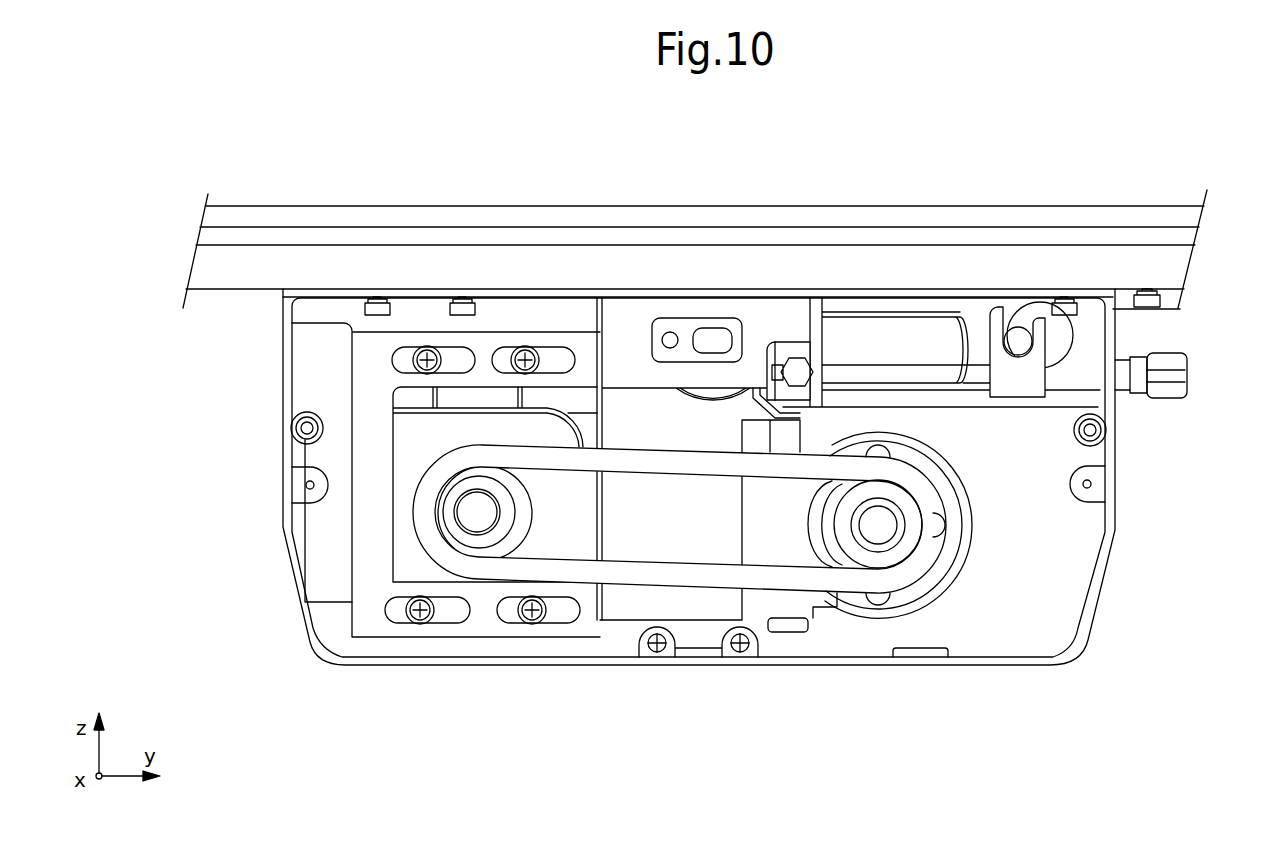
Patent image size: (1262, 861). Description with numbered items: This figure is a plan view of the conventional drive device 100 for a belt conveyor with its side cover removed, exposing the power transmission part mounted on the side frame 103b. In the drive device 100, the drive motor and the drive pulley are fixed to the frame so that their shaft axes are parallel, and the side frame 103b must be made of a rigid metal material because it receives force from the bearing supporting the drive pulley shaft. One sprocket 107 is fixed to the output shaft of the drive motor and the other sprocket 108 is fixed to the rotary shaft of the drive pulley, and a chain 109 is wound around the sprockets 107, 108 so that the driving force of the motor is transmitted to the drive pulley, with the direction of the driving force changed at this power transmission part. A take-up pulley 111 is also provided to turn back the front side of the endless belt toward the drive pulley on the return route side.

The drive device 100 is at (721, 512).
The side frame 103b is at (1085, 545).
The sprocket 107 is at (525, 522).
The sprocket 108 is at (830, 506).
The chain 109 is at (930, 550).
The take-up pulley 111 is at (1063, 333).